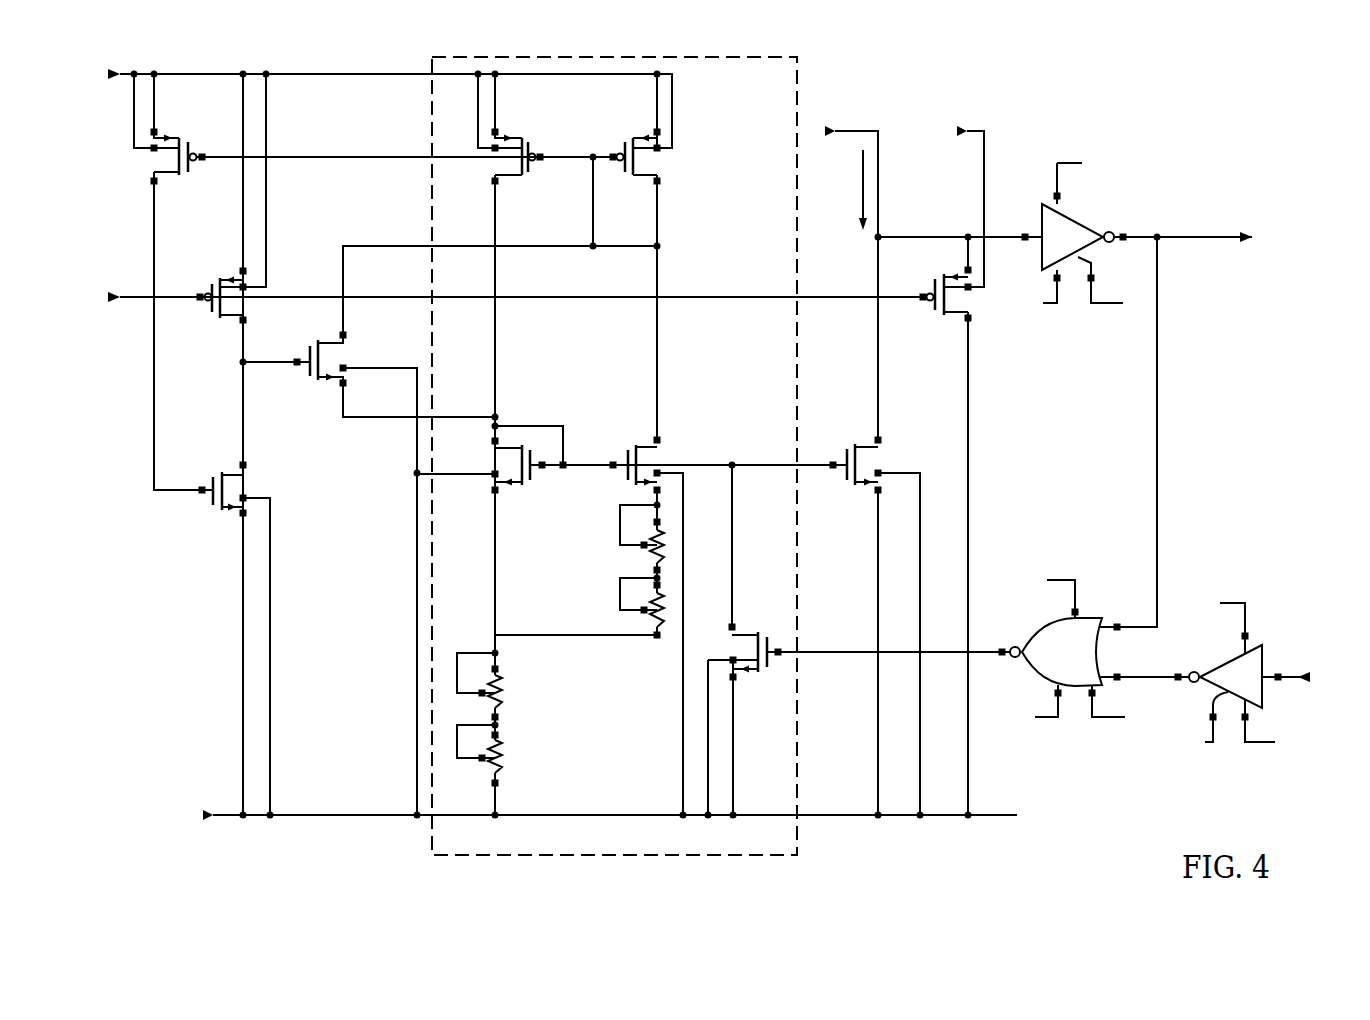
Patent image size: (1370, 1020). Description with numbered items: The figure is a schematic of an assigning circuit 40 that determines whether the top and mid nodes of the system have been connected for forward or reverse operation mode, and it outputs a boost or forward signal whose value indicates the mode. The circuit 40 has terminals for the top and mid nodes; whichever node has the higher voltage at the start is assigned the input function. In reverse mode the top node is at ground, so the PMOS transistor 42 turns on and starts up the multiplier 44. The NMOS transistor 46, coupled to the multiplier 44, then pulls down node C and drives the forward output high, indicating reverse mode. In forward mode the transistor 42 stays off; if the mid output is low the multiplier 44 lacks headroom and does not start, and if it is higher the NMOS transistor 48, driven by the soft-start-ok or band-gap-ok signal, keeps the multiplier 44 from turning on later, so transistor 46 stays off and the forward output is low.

The assigning circuit 40 is at (1226, 157).
The transistor 42 is at (237, 318).
The multiplier 44 is at (772, 55).
The transistor 46 is at (857, 447).
The transistor 48 is at (750, 672).